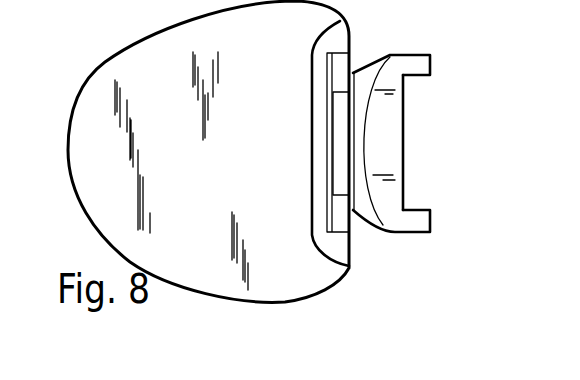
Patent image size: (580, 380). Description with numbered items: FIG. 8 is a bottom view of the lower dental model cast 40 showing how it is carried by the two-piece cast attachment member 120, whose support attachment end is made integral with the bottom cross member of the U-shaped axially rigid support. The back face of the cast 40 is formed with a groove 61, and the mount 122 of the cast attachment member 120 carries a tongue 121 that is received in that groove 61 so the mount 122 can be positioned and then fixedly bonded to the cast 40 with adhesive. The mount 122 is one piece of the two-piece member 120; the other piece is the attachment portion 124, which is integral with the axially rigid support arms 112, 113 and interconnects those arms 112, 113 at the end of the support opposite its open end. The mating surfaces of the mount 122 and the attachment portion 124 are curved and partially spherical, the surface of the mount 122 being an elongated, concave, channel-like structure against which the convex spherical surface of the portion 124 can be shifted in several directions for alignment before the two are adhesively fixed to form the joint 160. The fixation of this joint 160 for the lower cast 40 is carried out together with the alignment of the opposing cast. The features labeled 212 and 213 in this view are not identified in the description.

The lower cast 40 is at (230, 190).
The groove 61 is at (342, 222).
The tongue 121 is at (342, 125).
The cast attachment member 120 is at (454, 187).
The arm 112 is at (433, 70).
The arm 113 is at (437, 217).
The joint 160 is at (460, 141).
The attachment portion 124 is at (383, 158).
The mount 122 is at (363, 57).
The connector portion 212 is at (566, 89).
The connector portion 213 is at (569, 177).